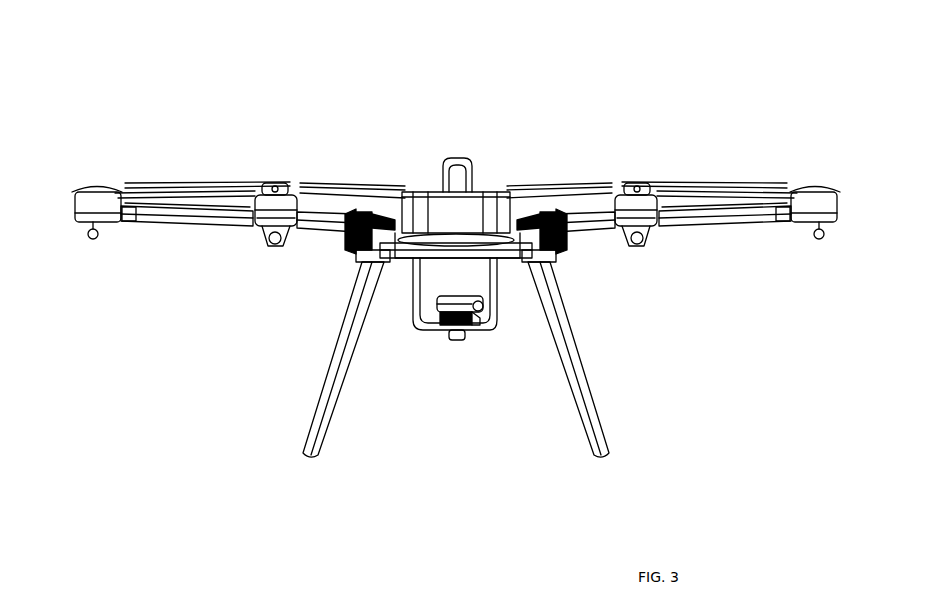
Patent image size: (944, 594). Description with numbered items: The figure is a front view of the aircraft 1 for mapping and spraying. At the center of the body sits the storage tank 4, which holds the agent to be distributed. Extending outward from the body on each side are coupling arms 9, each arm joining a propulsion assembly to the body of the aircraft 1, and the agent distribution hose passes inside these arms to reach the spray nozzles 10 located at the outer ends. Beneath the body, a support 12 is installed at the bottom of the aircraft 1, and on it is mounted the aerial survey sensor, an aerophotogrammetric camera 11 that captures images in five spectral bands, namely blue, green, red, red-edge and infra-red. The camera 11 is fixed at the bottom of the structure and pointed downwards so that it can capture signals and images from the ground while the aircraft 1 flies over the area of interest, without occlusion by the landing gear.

The aircraft 1 is at (447, 249).
The storage tank 4 is at (462, 208).
The coupling arm 9 is at (192, 218).
The spray nozzles 10 is at (92, 243).
The aerophotogrammetric camera 11 is at (493, 312).
The support 12 is at (430, 318).